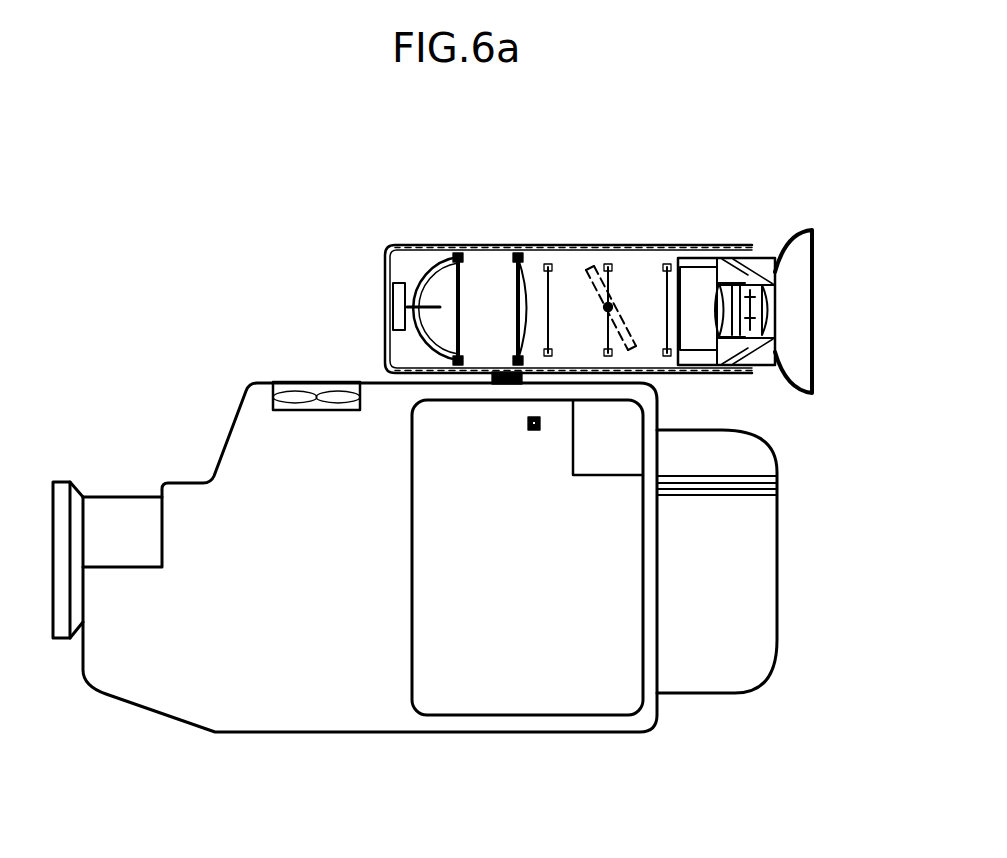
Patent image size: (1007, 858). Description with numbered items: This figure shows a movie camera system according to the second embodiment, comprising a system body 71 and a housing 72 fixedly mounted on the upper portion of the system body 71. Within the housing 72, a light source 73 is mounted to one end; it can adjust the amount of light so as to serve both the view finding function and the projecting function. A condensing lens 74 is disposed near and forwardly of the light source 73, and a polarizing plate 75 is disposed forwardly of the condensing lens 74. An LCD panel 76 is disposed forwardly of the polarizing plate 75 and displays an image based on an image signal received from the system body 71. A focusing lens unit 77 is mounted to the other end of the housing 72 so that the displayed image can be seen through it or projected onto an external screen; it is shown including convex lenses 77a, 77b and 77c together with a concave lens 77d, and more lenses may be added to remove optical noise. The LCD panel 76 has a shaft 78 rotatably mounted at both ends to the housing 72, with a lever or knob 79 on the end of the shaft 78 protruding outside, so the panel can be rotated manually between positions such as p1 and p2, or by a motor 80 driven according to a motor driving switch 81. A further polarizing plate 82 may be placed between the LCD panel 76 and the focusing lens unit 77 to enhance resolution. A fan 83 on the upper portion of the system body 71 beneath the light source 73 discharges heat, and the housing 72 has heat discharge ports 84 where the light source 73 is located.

The system body 71 is at (226, 468).
The housing 72 is at (470, 250).
The light source 73 is at (387, 306).
The condensing lens 74 is at (528, 280).
The polarizing plate 75 is at (550, 264).
The LCD panel 76 is at (612, 304).
The focusing lens unit 77 is at (770, 359).
The convex lens 77a is at (722, 281).
The convex lens 77b is at (736, 297).
The convex lens 77c is at (752, 308).
The concave lens 77d is at (766, 320).
The shaft 78 is at (760, 258).
The lever or knob 79 is at (668, 266).
The motor 80 is at (606, 458).
The motor driving switch 81 is at (533, 433).
The polarizing plate 82 is at (697, 378).
The fan 83 is at (280, 386).
The heat discharge ports 84 is at (435, 247).
The first position of mirror p1 is at (613, 250).
The second position of mirror p2 is at (648, 377).